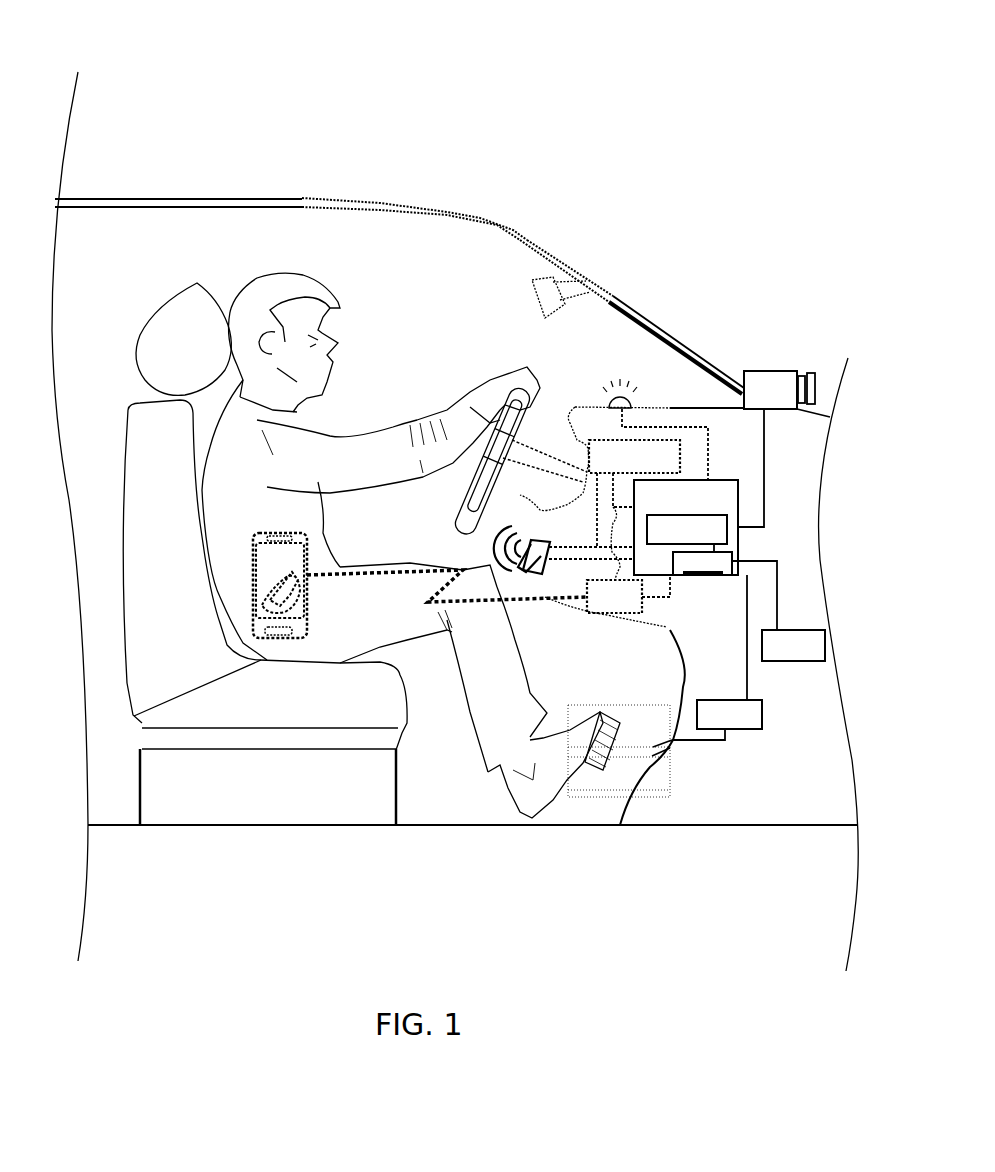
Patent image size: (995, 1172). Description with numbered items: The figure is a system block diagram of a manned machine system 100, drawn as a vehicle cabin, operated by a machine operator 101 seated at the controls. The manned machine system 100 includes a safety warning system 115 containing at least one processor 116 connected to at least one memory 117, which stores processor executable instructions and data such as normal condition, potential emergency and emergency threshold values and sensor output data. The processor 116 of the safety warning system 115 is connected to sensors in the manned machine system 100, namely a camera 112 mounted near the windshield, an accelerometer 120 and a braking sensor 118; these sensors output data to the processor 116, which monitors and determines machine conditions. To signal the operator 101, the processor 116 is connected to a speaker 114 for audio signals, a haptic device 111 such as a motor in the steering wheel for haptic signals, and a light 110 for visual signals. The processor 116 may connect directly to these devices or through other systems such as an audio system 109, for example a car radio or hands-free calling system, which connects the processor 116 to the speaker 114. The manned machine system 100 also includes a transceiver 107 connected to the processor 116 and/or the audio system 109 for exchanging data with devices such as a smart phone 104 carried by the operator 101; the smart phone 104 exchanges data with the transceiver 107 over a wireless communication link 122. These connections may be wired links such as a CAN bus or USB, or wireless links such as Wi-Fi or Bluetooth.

The manned machine system 100 is at (242, 92).
The machine operator 101 is at (233, 268).
The smart phone 104 is at (253, 553).
The transceiver 107 is at (596, 609).
The audio system 109 is at (616, 468).
The light 110 is at (632, 398).
The haptic device 111 is at (503, 437).
The camera 112 is at (764, 371).
The speaker 114 is at (512, 523).
The safety warning system 115 is at (668, 507).
The processor 116 is at (669, 542).
The memory 117 is at (725, 590).
The braking sensor 118 is at (711, 726).
The accelerometer 120 is at (775, 657).
The wireless communication link 122 is at (482, 602).